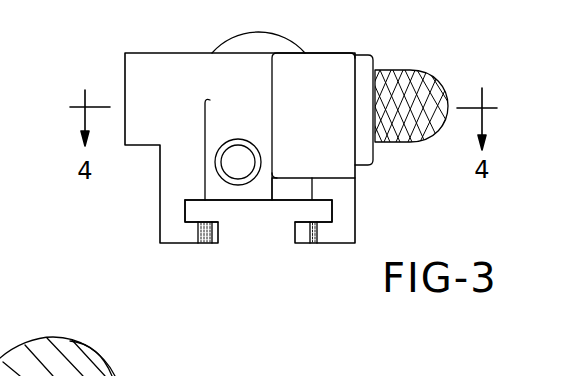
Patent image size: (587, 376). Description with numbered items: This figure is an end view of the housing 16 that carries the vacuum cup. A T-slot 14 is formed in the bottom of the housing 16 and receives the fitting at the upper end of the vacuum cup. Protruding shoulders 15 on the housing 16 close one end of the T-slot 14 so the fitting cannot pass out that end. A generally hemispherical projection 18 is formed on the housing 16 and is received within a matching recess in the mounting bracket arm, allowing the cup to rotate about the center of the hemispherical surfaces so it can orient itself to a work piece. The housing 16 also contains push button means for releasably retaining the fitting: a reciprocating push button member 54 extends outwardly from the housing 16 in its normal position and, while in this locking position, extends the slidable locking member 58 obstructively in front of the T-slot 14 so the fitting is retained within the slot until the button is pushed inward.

The T-slot 14 is at (189, 213).
The protruding shoulders 15 is at (207, 244).
The housing 16 is at (148, 50).
The hemispherical projection 18 is at (290, 38).
The push button member 54 is at (238, 157).
The slidable locking member 58 is at (236, 201).